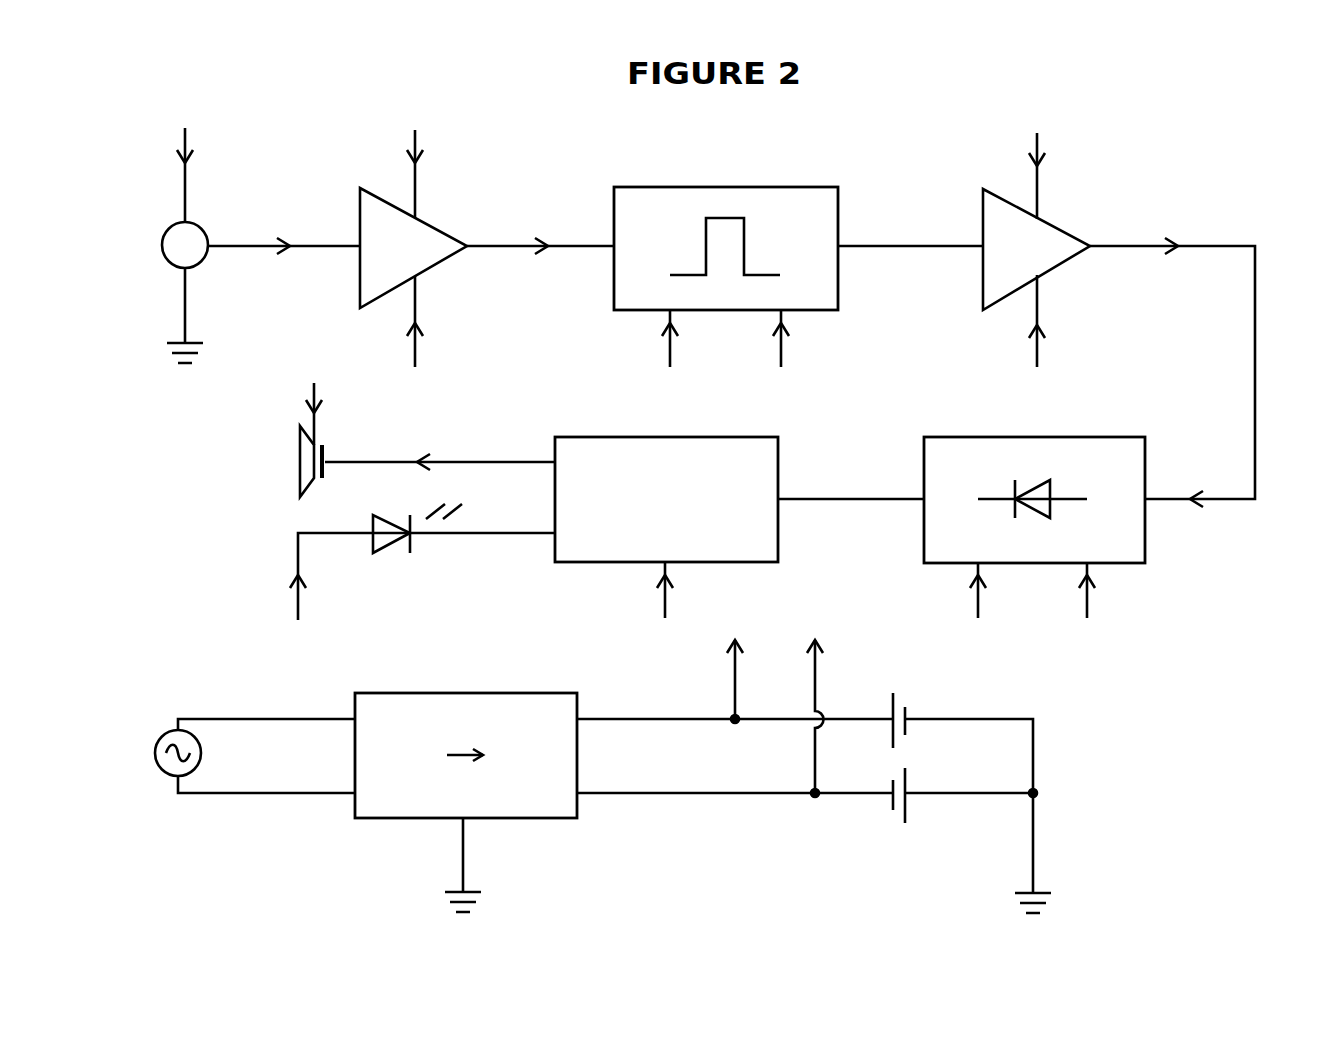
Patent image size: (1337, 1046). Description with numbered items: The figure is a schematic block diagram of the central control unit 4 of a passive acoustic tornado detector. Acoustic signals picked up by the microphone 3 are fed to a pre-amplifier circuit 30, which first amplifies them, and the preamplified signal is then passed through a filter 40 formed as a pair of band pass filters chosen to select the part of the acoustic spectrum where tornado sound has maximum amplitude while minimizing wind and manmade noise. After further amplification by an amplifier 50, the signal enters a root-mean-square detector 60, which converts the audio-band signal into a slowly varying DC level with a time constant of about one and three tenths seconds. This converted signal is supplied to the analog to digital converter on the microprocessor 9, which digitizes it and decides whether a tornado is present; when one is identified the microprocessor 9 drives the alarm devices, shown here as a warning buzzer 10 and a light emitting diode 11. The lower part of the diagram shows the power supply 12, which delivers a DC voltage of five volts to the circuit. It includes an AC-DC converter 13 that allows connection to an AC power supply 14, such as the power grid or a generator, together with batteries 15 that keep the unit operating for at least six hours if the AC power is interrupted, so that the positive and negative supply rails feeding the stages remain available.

The microphone 3 is at (197, 233).
The pre-amplifier circuit 30 is at (428, 238).
The filter 40 is at (825, 240).
The amplifier 50 is at (1052, 240).
The central control unit 4 is at (1198, 159).
The microprocessor 9 is at (765, 490).
The root-mean-square detector 60 is at (1133, 538).
The warning buzzer 10 is at (300, 457).
The light emitting diodes 11 is at (385, 540).
The power supply 12 is at (1195, 708).
The AC power supply 14 is at (175, 738).
The AC-DC converter 13 is at (548, 808).
The batteries 15 is at (917, 782).